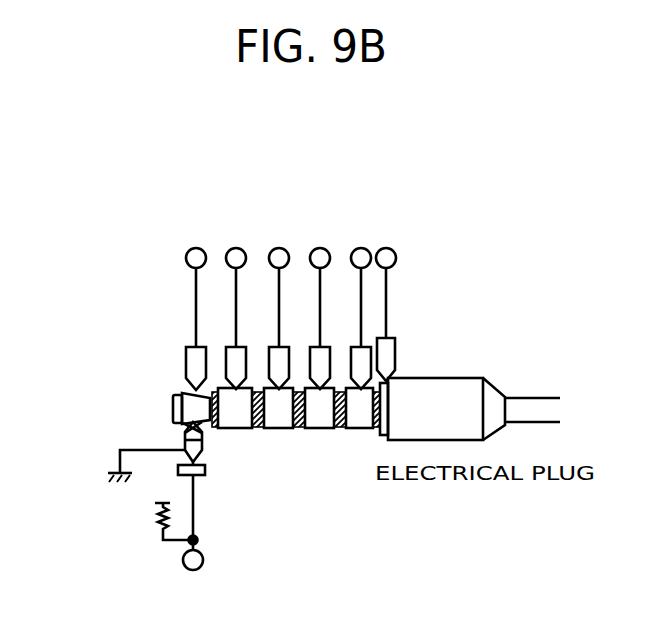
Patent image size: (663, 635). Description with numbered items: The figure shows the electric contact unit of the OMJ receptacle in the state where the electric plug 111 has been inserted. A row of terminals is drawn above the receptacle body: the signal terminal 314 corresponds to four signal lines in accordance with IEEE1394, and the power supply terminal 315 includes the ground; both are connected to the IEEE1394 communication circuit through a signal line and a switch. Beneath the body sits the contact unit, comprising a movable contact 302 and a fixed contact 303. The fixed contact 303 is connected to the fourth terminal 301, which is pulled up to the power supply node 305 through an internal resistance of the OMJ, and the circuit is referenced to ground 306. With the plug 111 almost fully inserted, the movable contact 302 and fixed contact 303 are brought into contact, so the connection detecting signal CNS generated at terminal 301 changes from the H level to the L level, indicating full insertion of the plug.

The signal terminal 314 is at (350, 210).
The power supply terminal 315 is at (363, 248).
The communication cable plug 111 is at (420, 377).
The movable contact 302 is at (202, 448).
The fixed contact 303 is at (205, 470).
The fourth terminal 301 is at (203, 562).
The power supply node 305 is at (157, 508).
The ground 306 is at (118, 466).